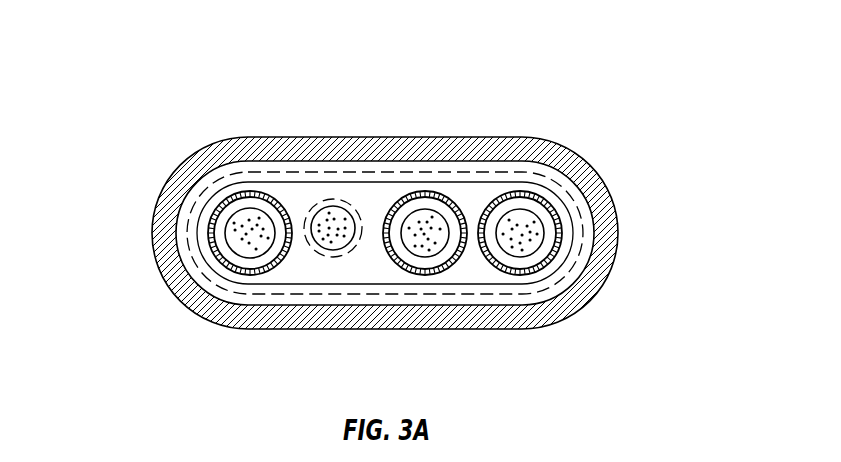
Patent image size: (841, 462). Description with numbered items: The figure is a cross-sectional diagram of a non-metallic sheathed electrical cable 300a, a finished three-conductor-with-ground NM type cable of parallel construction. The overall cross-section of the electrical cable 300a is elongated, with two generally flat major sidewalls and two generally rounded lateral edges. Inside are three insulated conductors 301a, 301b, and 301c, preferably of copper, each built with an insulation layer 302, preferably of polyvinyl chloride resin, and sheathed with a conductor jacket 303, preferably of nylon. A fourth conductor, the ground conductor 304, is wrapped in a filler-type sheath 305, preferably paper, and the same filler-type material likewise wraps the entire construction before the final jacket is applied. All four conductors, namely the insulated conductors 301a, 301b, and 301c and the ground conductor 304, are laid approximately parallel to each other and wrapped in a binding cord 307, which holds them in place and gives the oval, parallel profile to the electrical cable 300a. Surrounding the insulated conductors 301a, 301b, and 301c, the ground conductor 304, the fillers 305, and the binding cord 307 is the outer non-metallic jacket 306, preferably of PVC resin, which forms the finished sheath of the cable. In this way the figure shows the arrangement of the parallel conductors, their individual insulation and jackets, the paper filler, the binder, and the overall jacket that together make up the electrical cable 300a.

The electrical cable 300a is at (206, 56).
The insulated conductor 301a is at (238, 235).
The insulated conductor 301b is at (491, 181).
The insulated conductor 301c is at (601, 253).
The insulation layer 302 is at (555, 222).
The conductor jacket 303 is at (462, 212).
The ground conductor 304 is at (333, 245).
The filler-type sheath 305 is at (375, 297).
The non-metallic jacket 306 is at (360, 137).
The binding cord 307 is at (462, 285).